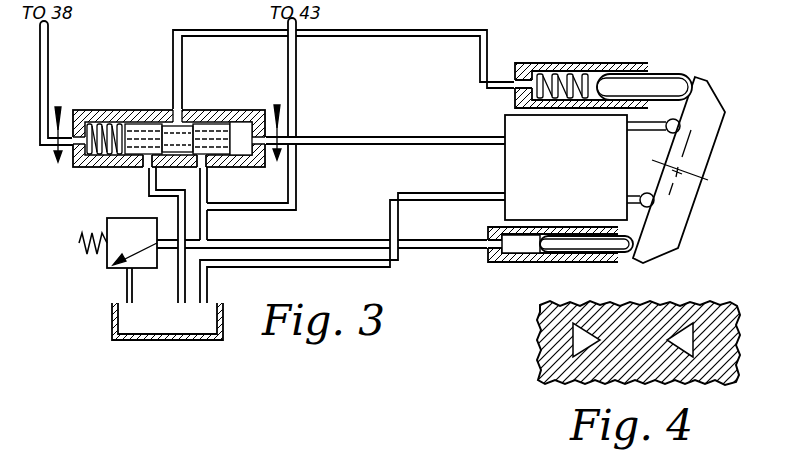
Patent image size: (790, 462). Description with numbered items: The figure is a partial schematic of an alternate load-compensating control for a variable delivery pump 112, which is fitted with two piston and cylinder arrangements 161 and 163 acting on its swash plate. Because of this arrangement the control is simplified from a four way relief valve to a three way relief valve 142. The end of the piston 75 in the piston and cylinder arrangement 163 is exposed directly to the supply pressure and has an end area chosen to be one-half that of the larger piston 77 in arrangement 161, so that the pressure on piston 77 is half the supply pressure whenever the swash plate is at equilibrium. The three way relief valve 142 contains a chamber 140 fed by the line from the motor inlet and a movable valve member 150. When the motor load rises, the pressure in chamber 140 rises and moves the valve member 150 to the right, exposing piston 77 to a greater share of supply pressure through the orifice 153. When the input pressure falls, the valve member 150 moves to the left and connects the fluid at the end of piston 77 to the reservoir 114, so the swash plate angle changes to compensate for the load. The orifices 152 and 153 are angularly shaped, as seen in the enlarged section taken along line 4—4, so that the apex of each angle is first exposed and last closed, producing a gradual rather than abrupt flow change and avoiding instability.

In FIG. 3, the section line 4— 4 is at (167, 124).
In FIG. 3, the piston 75 is at (587, 248).
In FIG. 3, the piston 77 is at (670, 76).
In FIG. 3, the variable delivery pump 112 is at (512, 173).
In FIG. 3, the reservoir 114 is at (113, 327).
In FIG. 3, the chamber 140 is at (96, 111).
In FIG. 3, the three way relief valve 142 is at (101, 168).
In FIG. 3, the valve member 150 is at (208, 124).
In FIG. 3, the orifice 152 is at (147, 168).
In FIG. 4, the orifice 152 is at (573, 347).
In FIG. 3, the orifice 153 is at (207, 168).
In FIG. 4, the orifice 153 is at (692, 323).
In FIG. 3, the piston and cylinder arrangement 161 is at (580, 71).
In FIG. 3, the piston and cylinder arrangement 163 is at (531, 256).